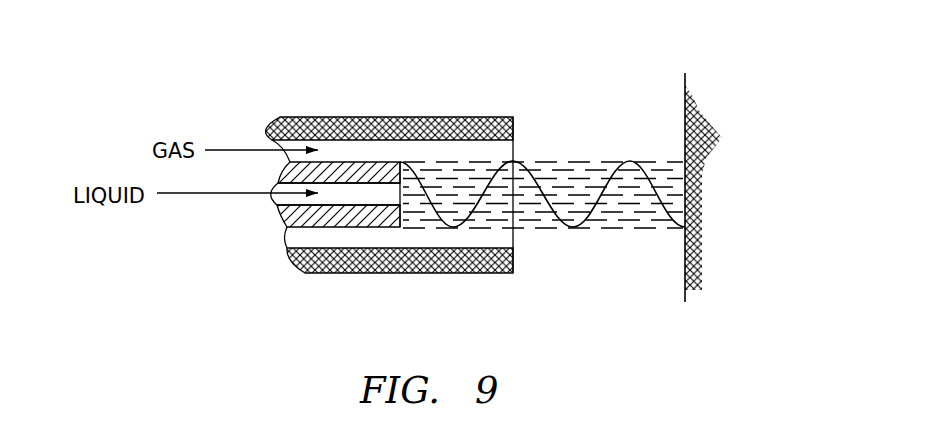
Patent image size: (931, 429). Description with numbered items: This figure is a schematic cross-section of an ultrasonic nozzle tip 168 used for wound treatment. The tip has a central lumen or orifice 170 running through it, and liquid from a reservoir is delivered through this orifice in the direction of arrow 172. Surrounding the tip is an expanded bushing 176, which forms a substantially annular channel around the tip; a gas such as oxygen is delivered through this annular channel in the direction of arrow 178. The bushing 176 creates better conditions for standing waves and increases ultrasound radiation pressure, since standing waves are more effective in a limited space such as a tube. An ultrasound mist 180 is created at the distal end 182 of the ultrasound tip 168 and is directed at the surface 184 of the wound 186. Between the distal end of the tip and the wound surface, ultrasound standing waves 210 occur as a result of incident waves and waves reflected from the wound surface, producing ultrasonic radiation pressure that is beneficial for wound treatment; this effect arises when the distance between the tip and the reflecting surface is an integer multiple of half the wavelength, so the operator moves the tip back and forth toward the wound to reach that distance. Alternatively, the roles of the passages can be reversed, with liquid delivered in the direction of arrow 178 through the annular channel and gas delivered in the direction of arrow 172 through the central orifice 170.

The ultrasonic nozzle tip 168 is at (308, 221).
The central lumen or orifice 170 is at (360, 197).
The arrow 172 is at (227, 195).
The expanded bushing 176 is at (352, 128).
The arrow 178 is at (242, 150).
The ultrasound mist 180 is at (562, 187).
The distal end 182 is at (401, 197).
The surface 184 is at (685, 98).
The wound 186 is at (718, 142).
The ultrasound standing waves 210 is at (578, 229).